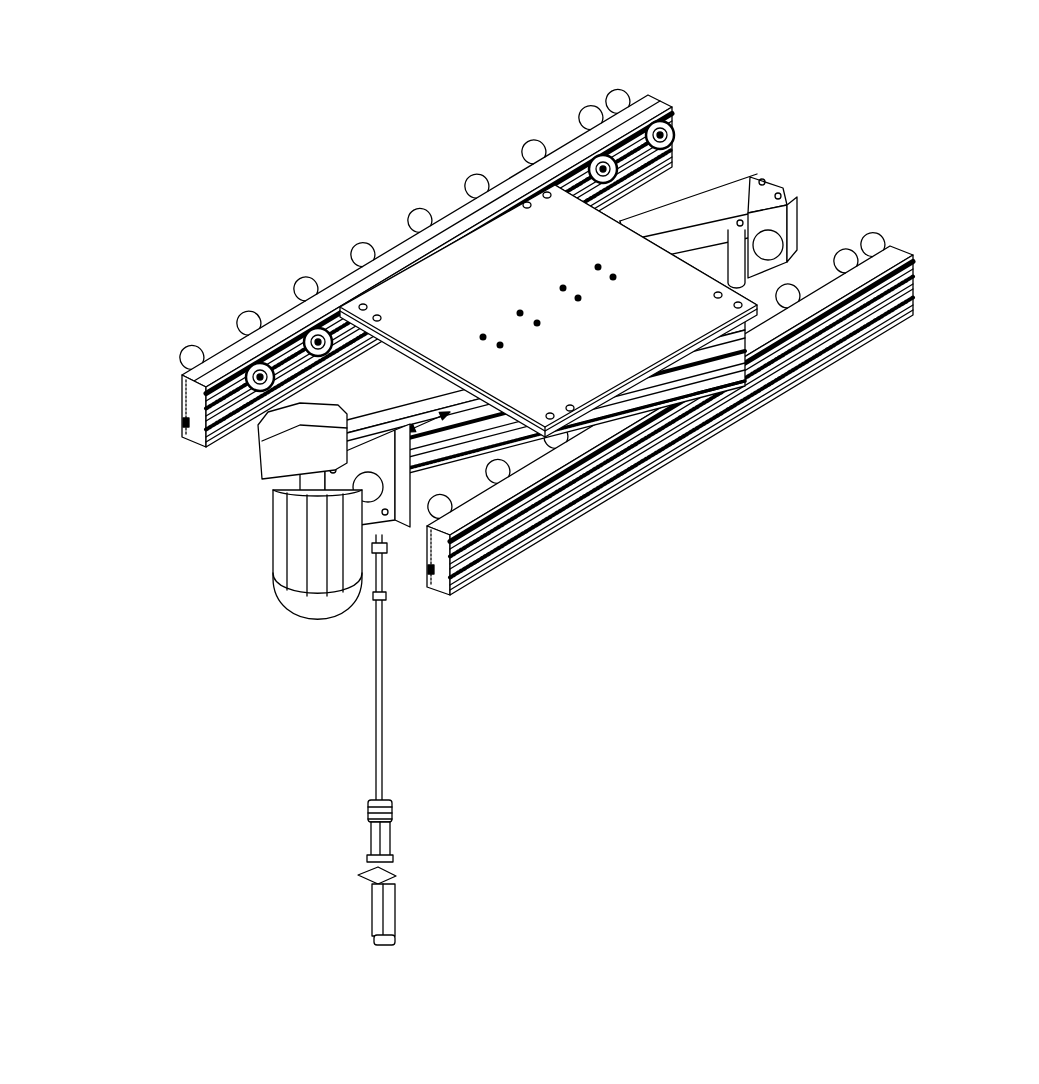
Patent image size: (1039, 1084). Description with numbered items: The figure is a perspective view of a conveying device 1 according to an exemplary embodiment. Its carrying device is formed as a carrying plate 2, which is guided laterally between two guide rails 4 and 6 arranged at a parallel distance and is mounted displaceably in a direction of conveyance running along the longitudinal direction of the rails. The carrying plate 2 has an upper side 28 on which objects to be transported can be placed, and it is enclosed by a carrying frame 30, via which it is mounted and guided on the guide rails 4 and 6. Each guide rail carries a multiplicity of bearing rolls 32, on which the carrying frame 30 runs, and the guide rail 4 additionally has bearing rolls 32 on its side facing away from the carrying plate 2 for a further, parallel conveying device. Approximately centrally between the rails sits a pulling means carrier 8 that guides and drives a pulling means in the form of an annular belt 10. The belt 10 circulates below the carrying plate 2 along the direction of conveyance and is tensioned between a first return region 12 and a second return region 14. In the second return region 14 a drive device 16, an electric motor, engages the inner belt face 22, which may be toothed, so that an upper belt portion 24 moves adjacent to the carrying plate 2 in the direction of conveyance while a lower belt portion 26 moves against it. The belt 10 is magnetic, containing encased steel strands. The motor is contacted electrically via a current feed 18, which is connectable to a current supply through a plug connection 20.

The conveying device 1 is at (108, 263).
The carrying plate 2 is at (433, 262).
The guide rail 4 is at (668, 98).
The guide rail 6 is at (897, 246).
The pulling means carrier 8 is at (790, 217).
The belt 10 is at (690, 235).
The first return region 12 is at (784, 244).
The second return region 14 is at (318, 492).
The drive device 16 is at (280, 460).
The current feed 18 is at (383, 668).
The plug connection 20 is at (412, 850).
The inner belt face 22 is at (505, 472).
The upper belt portion 24 is at (340, 450).
The lower belt portion 26 is at (590, 490).
The upper side 28 is at (514, 272).
The carrying frame 30 is at (663, 407).
The bearing rolls 32 is at (309, 292).